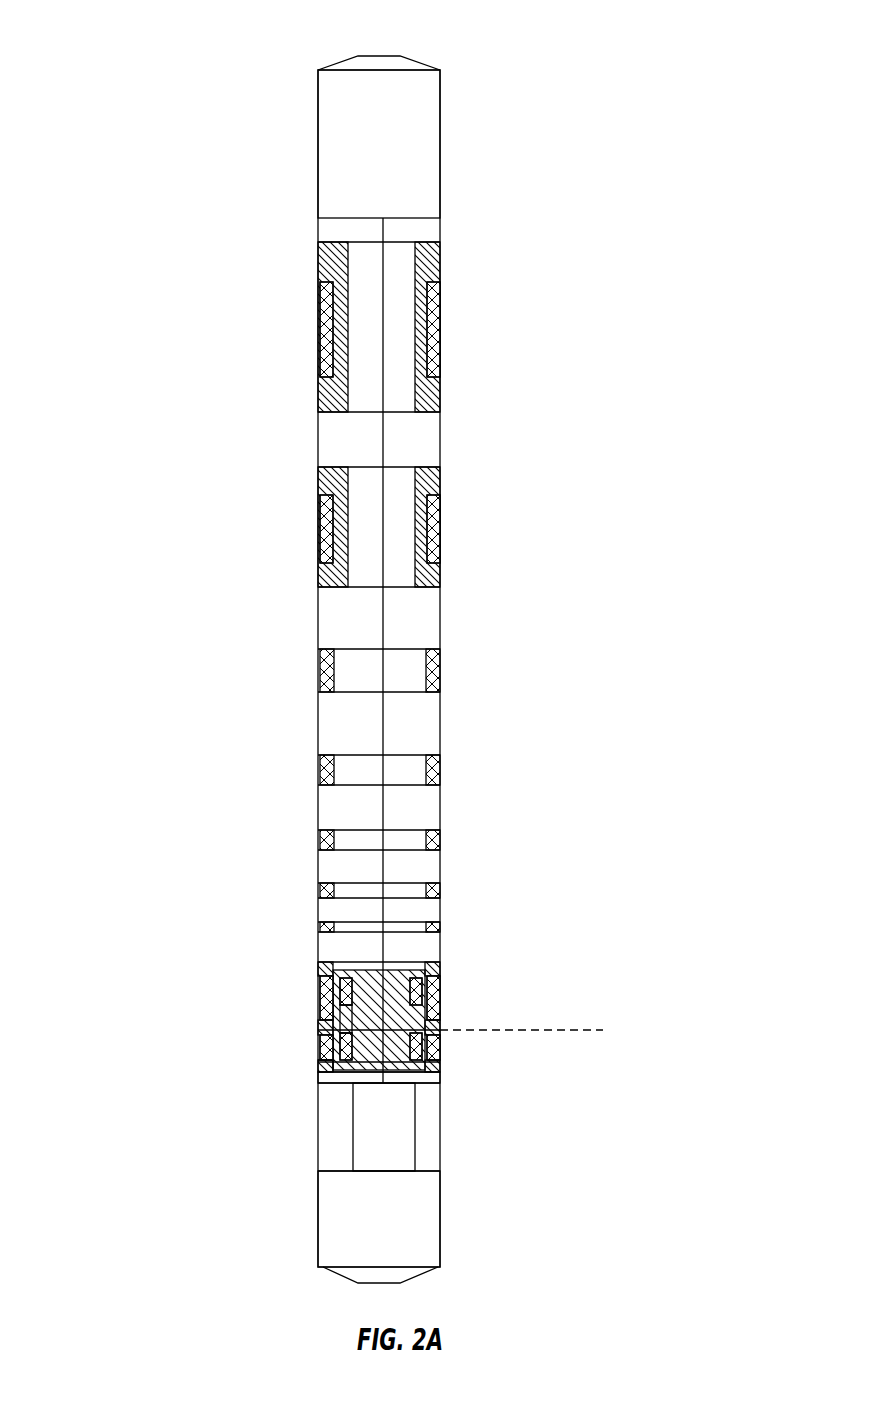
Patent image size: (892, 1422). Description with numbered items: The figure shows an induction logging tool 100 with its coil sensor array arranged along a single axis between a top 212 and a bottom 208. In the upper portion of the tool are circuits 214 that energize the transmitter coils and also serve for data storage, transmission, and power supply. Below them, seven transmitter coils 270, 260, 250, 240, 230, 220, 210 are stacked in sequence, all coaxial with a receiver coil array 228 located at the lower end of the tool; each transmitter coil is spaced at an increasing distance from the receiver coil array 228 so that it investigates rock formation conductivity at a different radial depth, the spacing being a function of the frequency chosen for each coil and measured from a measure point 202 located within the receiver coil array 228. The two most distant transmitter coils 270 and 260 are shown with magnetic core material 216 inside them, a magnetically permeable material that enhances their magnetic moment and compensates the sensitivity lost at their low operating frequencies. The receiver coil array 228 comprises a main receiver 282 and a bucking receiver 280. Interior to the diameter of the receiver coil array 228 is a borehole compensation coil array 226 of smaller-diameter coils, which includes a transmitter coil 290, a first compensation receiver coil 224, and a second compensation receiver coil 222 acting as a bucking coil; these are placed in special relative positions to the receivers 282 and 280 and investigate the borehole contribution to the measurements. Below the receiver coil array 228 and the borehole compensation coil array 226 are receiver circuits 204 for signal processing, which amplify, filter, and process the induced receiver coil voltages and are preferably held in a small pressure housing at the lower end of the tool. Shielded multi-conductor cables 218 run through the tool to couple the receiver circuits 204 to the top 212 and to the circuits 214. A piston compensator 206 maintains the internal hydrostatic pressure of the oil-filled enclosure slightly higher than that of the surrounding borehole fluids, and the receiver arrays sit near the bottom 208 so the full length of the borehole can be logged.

The induction logging tool 100 is at (156, 124).
The top 212 is at (425, 57).
The circuits 214 is at (440, 128).
The magnetic core material 216 is at (430, 405).
The shielded multi-conductor cables 218 is at (383, 628).
The transmitter coil 270 is at (440, 305).
The transmitter coil 260 is at (440, 512).
The transmitter coil 250 is at (442, 662).
The transmitter coil 240 is at (442, 762).
The transmitter coil 230 is at (442, 838).
The transmitter coil 220 is at (442, 887).
The transmitter coil 210 is at (442, 922).
The bucking receiver 280 is at (440, 975).
The main receiver 282 is at (440, 1022).
The measure point 202 is at (483, 1032).
The second compensation receiver coil 222 is at (425, 1070).
The transmitter coil 290 is at (435, 1080).
The first compensation receiver coil 224 is at (385, 972).
The borehole compensation coil array 226 is at (355, 1017).
The receiver coil array 228 is at (335, 1065).
The receiver circuits 204 is at (395, 1125).
The piston compensator 206 is at (440, 1218).
The bottom 208 is at (435, 1272).